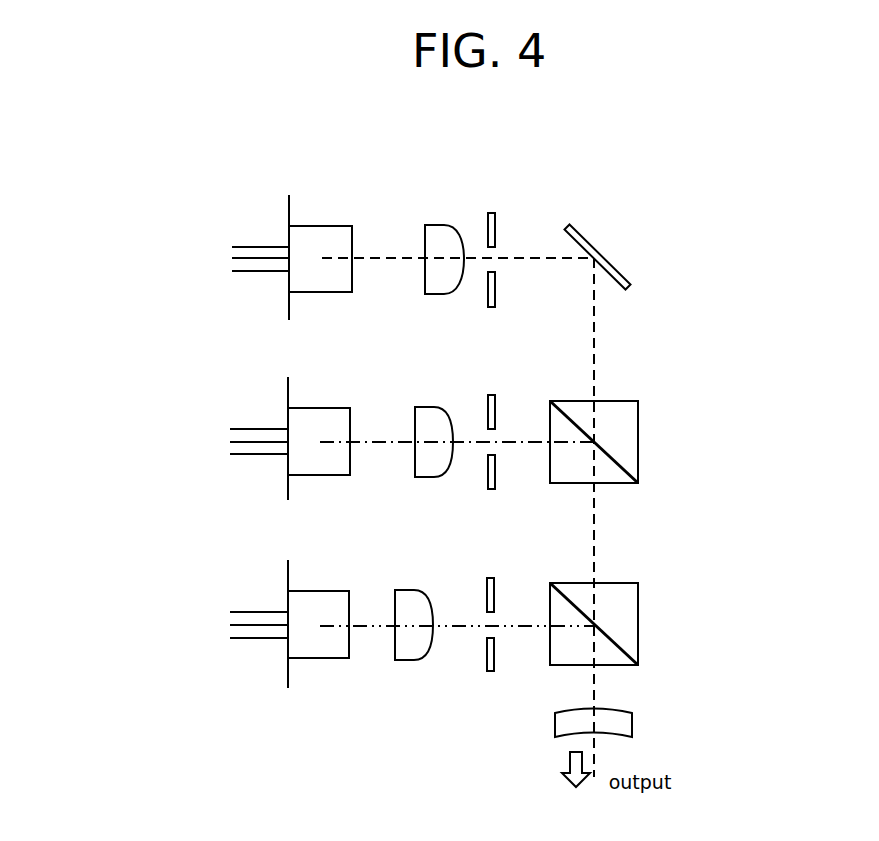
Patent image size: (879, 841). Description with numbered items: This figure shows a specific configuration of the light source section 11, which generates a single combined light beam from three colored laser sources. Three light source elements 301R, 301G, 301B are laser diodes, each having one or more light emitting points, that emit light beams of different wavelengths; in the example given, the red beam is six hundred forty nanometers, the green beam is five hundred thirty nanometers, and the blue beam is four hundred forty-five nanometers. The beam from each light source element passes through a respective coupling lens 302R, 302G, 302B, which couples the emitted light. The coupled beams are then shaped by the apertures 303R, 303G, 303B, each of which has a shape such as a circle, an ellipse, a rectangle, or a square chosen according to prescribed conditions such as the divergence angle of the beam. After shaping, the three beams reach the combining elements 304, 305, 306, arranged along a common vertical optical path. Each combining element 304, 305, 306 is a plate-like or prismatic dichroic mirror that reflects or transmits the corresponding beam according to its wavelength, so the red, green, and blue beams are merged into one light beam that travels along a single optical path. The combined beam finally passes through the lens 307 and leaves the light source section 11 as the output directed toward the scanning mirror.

The light source section 11 is at (637, 151).
The light source element 301B is at (320, 225).
The coupling lens 302B is at (433, 225).
The aperture 303B is at (492, 212).
The light source element 301G is at (318, 408).
The coupling lens 302G is at (423, 407).
The aperture 303G is at (492, 395).
The light source element 301R is at (318, 591).
The coupling lens 302R is at (402, 590).
The aperture 303R is at (490, 578).
The combining element 304 is at (607, 257).
The combining element 305 is at (617, 401).
The combining element 306 is at (612, 583).
The lens 307 is at (633, 727).